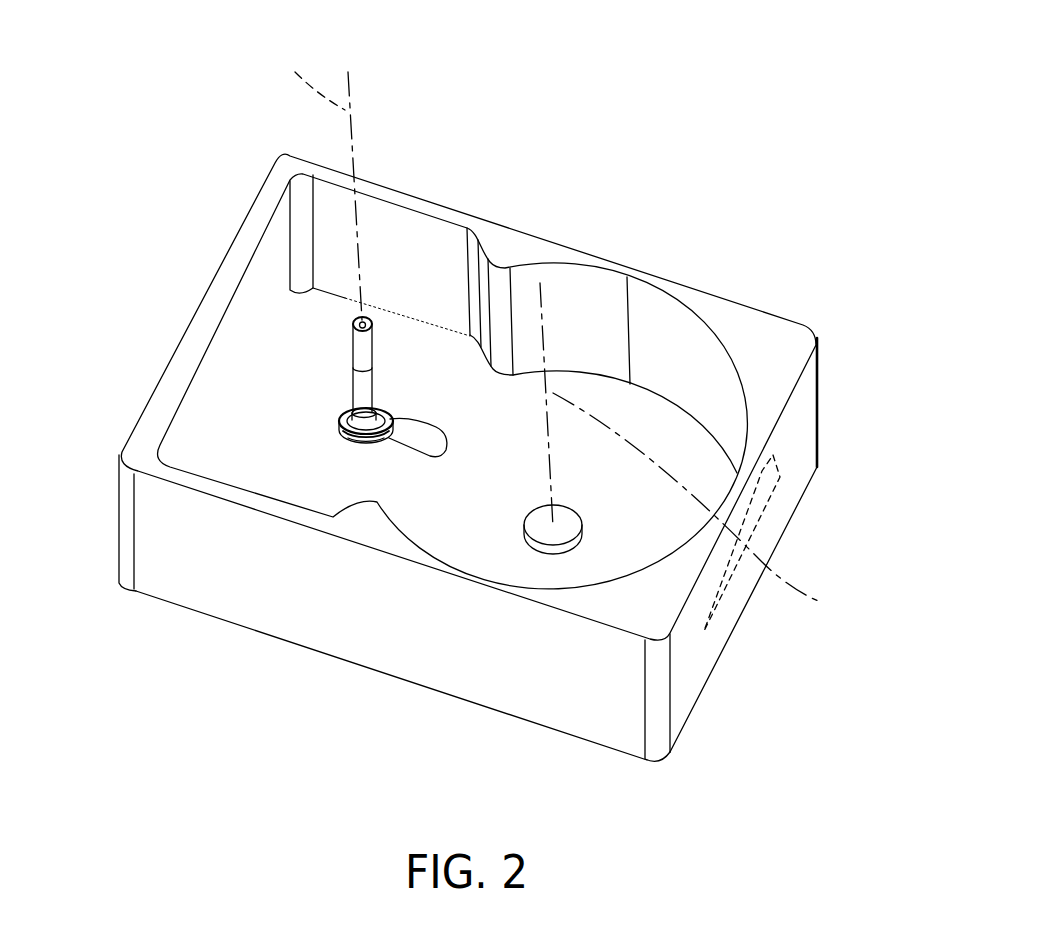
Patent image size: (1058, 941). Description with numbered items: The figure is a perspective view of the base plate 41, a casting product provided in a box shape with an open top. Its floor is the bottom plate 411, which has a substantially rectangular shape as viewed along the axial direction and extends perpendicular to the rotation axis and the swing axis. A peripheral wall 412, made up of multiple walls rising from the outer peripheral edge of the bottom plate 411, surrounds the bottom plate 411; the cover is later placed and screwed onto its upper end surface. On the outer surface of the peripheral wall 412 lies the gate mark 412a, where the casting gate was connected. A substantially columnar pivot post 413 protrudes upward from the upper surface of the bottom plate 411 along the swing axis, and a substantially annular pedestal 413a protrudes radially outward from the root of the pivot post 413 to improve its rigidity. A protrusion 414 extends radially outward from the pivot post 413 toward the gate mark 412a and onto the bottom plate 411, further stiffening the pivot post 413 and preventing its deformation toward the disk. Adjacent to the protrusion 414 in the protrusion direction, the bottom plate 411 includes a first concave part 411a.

The base plate 41 is at (833, 108).
The bottom plate 411 is at (330, 393).
The first concave part 411a is at (418, 443).
The peripheral wall 412 is at (158, 393).
The gate mark 412a is at (774, 474).
The pivot post 413 is at (367, 320).
The pedestal 413a is at (355, 427).
The protrusion 414 is at (390, 420).